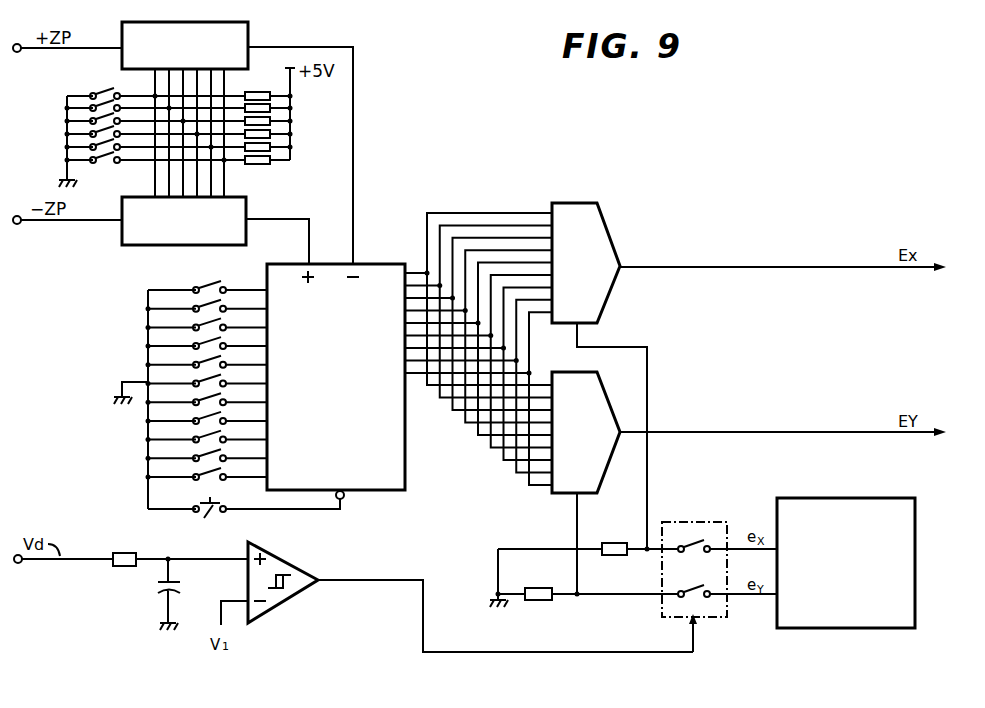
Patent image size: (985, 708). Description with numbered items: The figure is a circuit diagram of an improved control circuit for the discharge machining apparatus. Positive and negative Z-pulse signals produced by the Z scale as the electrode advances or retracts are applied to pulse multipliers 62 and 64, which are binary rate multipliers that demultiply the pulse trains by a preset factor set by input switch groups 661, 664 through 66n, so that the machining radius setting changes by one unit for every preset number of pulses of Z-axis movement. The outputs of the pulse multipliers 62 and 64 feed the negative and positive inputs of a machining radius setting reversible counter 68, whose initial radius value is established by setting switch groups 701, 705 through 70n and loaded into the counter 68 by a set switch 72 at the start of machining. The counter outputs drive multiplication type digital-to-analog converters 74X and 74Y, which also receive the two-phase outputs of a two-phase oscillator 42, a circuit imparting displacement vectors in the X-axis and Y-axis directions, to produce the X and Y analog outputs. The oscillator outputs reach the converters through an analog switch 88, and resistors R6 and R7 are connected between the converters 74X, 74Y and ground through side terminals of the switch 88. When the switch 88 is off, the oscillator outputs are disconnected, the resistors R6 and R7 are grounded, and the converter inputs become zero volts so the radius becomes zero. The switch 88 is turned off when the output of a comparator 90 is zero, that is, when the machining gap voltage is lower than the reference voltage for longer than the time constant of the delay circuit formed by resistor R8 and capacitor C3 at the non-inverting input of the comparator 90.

The pulse multiplier 62 is at (248, 33).
The pulse multiplier 64 is at (120, 237).
The input switch group 661 is at (107, 93).
The input switch group 664 is at (105, 130).
The input switch group 66n is at (108, 162).
The machining radius setting reversible counter 68 is at (405, 445).
The setting switch group 701 is at (208, 285).
The setting switch group 705 is at (205, 358).
The setting switch group 70n is at (215, 469).
The set switch 72 is at (244, 519).
The digital-to-analog converter 74X is at (605, 219).
The digital-to-analog converter 74Y is at (607, 399).
The analog switch 88 is at (684, 520).
The comparator 90 is at (292, 563).
The two-phase oscillator 42 is at (915, 553).
The resistor R6 is at (612, 541).
The resistor R7 is at (531, 601).
The resistor R8 is at (124, 552).
The capacitor C3 is at (162, 591).